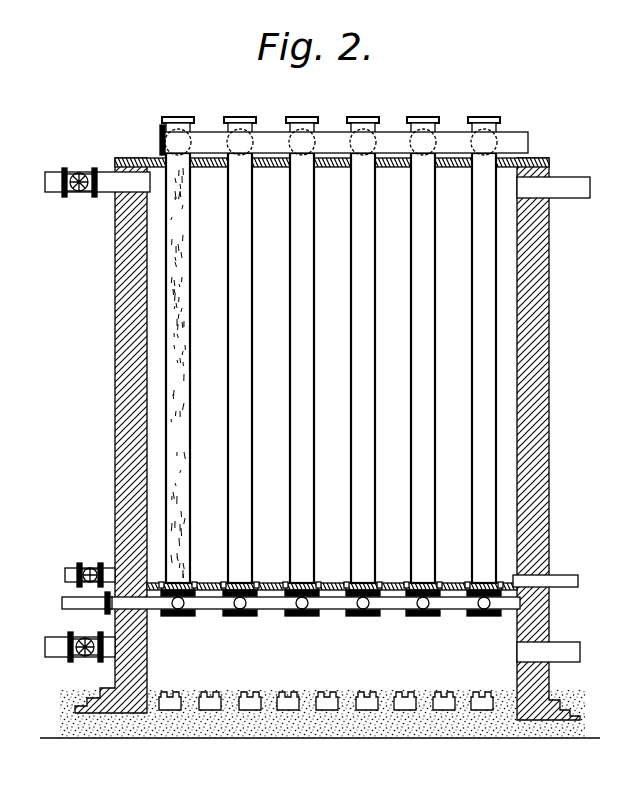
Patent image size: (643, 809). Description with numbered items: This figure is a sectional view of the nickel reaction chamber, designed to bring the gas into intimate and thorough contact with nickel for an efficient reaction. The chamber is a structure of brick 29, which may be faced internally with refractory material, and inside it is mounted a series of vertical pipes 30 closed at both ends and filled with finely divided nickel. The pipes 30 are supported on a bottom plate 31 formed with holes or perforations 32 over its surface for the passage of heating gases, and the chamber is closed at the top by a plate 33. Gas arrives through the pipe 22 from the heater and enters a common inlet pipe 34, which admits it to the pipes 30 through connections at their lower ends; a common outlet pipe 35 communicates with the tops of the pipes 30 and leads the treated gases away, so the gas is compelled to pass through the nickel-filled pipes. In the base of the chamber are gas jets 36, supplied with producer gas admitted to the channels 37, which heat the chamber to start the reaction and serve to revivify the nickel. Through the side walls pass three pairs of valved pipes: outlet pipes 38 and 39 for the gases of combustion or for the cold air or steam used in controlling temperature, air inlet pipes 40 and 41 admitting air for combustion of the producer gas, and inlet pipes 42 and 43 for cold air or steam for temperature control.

The pipe 22 is at (80, 606).
The brick structure 29 is at (122, 408).
The pipes 30 is at (226, 408).
The bottom plate 31 is at (197, 587).
The holes or perforations 32 is at (320, 583).
The plate 33 is at (335, 167).
The common inlet pipe 34 is at (268, 610).
The common outlet pipe 35 is at (520, 143).
The gas jets 36 is at (242, 688).
The channels 37 is at (173, 712).
The outlet pipe 38 is at (97, 182).
The outlet pipe 39 is at (553, 187).
The air inlet pipe 40 is at (91, 647).
The air inlet pipe 41 is at (548, 652).
The inlet pipe 42 is at (92, 566).
The inlet pipe 43 is at (560, 581).